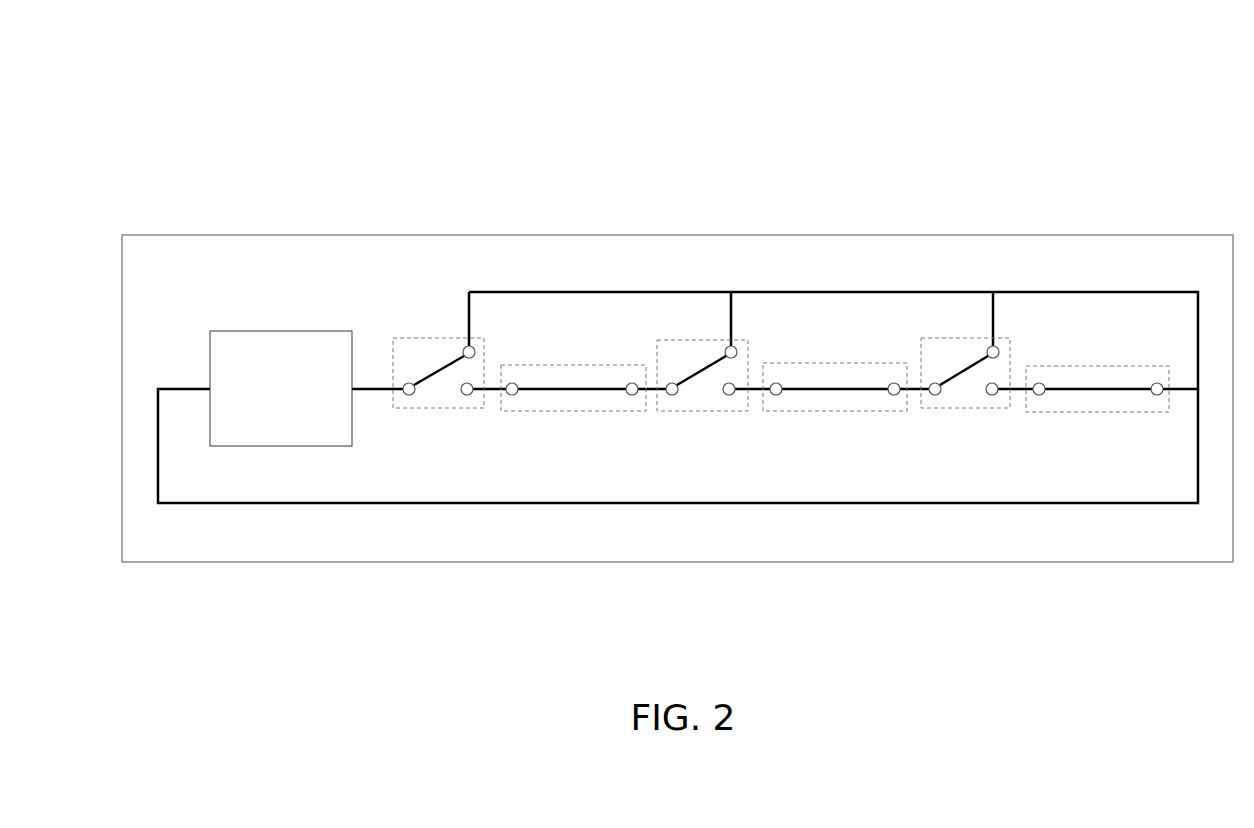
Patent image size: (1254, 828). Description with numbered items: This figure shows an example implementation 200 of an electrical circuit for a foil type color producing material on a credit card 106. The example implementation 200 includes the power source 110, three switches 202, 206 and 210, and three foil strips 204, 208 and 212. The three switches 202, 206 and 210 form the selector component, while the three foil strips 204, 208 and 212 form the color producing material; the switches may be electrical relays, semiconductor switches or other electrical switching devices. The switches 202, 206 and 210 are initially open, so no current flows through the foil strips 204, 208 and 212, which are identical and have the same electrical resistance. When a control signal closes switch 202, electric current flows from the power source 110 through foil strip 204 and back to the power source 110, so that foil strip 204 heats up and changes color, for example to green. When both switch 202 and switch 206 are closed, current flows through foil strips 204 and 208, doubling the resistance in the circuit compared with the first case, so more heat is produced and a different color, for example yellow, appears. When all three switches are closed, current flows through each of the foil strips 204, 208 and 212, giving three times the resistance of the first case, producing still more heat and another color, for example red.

The example implementation 200 is at (112, 44).
The credit card 106 is at (193, 236).
The power source 110 is at (281, 388).
The switch 202 is at (456, 337).
The foil strip 204 is at (568, 363).
The switch 206 is at (720, 340).
The foil strip 208 is at (829, 363).
The switch 210 is at (980, 337).
The foil strip 212 is at (1089, 365).